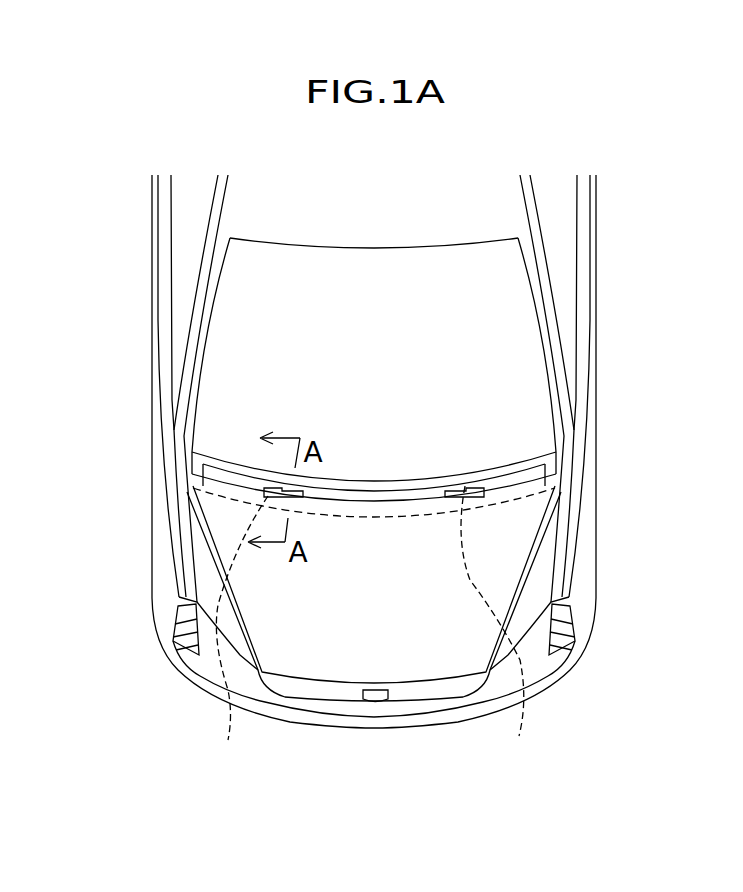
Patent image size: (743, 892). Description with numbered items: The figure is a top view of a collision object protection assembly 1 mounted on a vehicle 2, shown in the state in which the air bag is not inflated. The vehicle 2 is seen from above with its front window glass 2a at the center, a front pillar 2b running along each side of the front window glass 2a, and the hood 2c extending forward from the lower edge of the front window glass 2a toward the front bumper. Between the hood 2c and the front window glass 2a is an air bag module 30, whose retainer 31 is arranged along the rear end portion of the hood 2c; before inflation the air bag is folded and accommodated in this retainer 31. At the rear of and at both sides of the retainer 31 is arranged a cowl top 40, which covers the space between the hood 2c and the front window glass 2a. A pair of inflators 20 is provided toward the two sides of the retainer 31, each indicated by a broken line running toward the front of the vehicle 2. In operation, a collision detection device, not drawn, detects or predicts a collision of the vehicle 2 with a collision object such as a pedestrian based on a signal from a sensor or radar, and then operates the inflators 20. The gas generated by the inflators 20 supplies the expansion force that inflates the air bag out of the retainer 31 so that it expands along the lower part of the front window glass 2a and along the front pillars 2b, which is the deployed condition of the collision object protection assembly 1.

The collision object protection assembly 1 is at (420, 545).
The vehicle 2 is at (598, 225).
The front window glass 2a is at (232, 338).
The front pillars 2b is at (197, 372).
The hood 2c is at (353, 663).
The inflators 20 is at (374, 630).
The air bag module 30 is at (233, 469).
The retainer 31 is at (552, 468).
The cowl top 40 is at (377, 481).